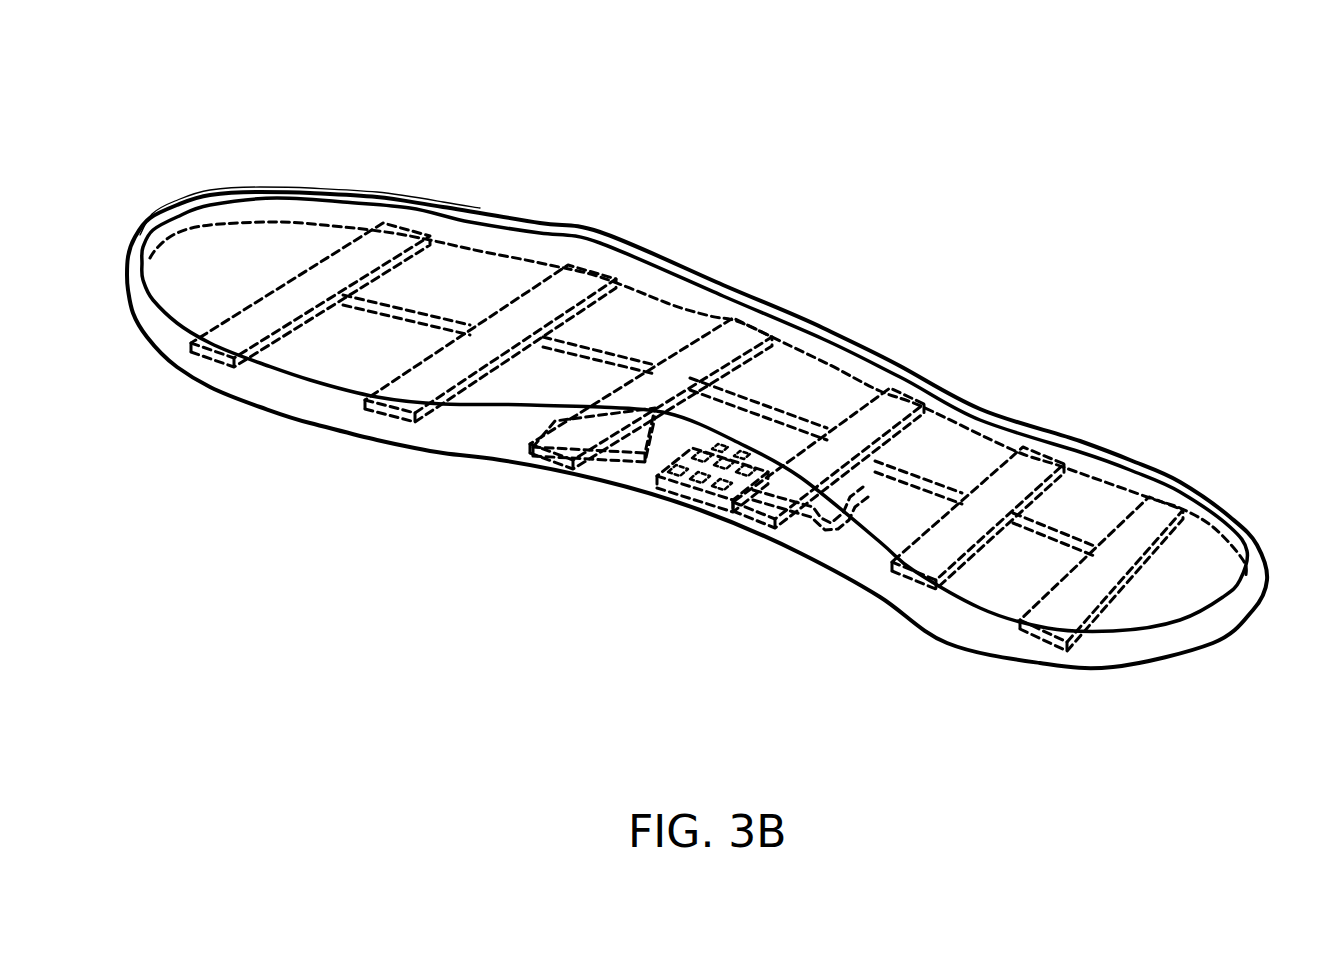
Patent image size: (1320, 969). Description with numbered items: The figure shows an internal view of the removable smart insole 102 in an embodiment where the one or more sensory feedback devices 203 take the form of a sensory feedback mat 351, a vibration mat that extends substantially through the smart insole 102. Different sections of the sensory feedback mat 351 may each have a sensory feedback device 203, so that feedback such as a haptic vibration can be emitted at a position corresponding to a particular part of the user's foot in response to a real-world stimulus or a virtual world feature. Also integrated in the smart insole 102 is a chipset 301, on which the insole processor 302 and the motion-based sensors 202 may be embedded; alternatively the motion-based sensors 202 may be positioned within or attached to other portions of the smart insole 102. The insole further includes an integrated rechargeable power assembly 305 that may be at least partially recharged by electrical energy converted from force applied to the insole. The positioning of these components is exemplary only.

The smart insole 102 is at (1155, 142).
The motion-based sensors 202 is at (712, 445).
The sensory feedback devices 203 is at (707, 347).
The chipset 301 is at (690, 505).
The insole processor 302 is at (758, 465).
The integrated rechargeable power assembly 305 is at (627, 452).
The sensory feedback mat 351 is at (1130, 598).